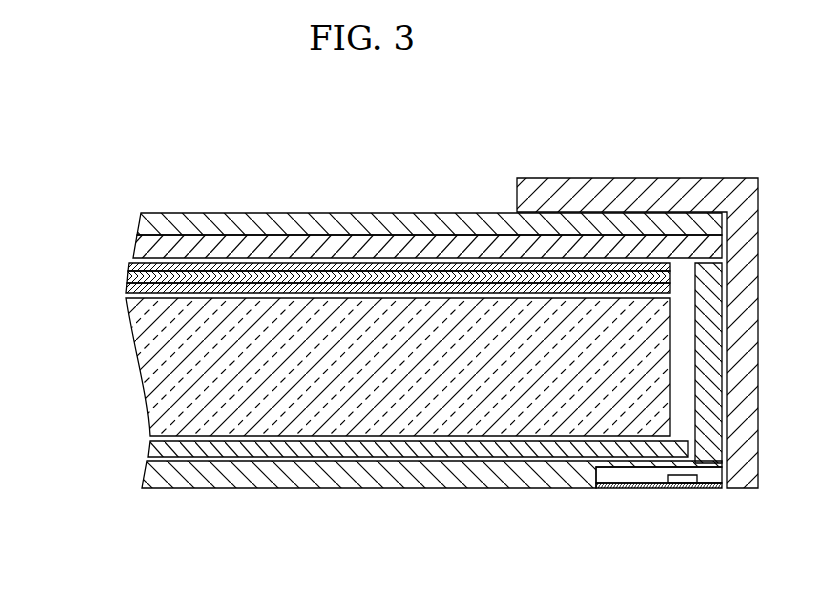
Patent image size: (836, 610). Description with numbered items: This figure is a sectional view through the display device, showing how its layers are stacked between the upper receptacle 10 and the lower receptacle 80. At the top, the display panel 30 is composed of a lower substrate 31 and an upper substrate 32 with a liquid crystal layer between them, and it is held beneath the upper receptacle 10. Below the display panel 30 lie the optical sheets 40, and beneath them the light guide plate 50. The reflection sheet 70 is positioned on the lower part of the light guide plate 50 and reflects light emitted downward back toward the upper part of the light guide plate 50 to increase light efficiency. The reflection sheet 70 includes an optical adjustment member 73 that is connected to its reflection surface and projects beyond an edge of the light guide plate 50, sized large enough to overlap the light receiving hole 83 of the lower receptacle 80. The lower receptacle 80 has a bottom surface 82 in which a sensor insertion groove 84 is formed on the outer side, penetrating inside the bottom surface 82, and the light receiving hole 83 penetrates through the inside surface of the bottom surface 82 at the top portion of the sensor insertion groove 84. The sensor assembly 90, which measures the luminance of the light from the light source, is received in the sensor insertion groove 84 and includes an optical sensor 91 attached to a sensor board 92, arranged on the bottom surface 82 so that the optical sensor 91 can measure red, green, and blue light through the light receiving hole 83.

The upper receptacle 10 is at (657, 192).
The display panel 30 is at (368, 227).
The lower substrate 31 is at (152, 247).
The upper substrate 32 is at (152, 224).
The optical sheets 40 is at (120, 260).
The light guide plate 50 is at (158, 372).
The reflection sheet 70 is at (444, 470).
The optical adjustment member 73 is at (684, 448).
The lower receptacle 80 is at (703, 409).
The bottom surface 82 is at (257, 478).
The light receiving hole 83 is at (661, 484).
The sensor insertion groove 84 is at (606, 475).
The sensor assembly 90 is at (692, 528).
The optical sensor 91 is at (683, 477).
The sensor board 92 is at (708, 485).